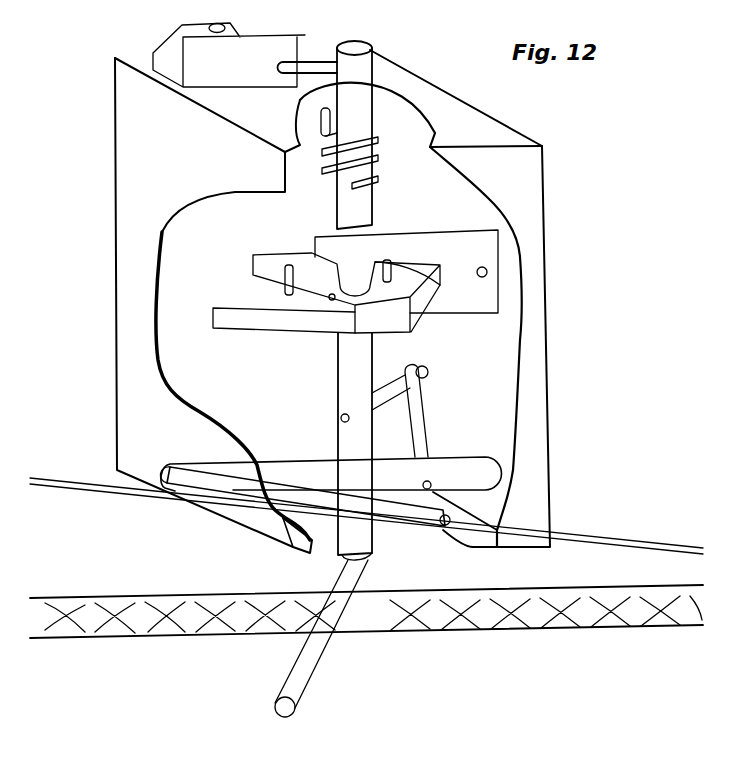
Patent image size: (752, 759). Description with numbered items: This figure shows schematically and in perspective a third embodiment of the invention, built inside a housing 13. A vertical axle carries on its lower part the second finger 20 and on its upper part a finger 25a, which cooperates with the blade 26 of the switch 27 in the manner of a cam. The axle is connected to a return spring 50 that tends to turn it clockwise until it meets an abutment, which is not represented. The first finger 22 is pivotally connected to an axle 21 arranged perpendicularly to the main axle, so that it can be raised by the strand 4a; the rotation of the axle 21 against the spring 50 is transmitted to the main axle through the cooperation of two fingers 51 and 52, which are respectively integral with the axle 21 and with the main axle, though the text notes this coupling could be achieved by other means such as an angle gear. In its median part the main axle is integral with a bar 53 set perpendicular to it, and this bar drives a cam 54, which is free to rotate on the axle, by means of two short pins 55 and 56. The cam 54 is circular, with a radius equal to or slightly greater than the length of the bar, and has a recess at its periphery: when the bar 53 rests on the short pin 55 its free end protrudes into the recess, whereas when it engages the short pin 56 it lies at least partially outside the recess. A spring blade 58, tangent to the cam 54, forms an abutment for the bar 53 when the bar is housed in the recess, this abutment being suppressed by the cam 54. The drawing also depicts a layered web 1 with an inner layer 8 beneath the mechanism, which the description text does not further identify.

The fabric web 1 is at (97, 580).
The fabric layer 8 is at (168, 623).
The strand 4a is at (587, 537).
The housing 13 is at (480, 115).
The second finger 20 is at (300, 682).
The axle 21 is at (487, 470).
The first finger 22 is at (222, 510).
The finger 25a is at (308, 52).
The blade 26 is at (217, 77).
The switch 27 is at (240, 25).
The return spring 50 is at (380, 152).
The finger 51 is at (422, 413).
The finger 52 is at (428, 373).
The bar 53 is at (287, 253).
The cam 54 is at (237, 298).
The short pin 55 is at (283, 277).
The short pin 56 is at (440, 293).
The spring blade 58 is at (487, 243).